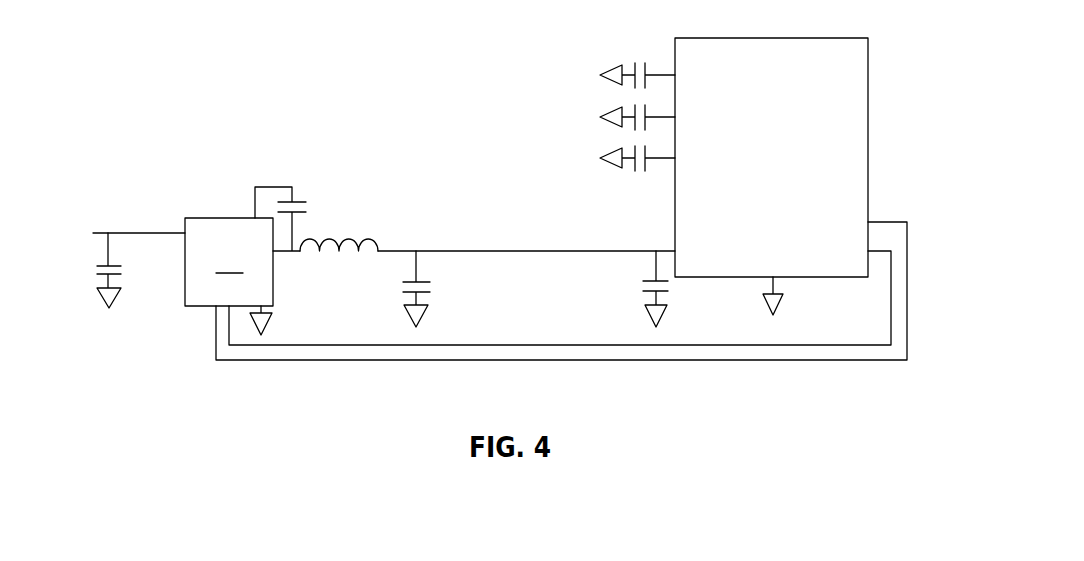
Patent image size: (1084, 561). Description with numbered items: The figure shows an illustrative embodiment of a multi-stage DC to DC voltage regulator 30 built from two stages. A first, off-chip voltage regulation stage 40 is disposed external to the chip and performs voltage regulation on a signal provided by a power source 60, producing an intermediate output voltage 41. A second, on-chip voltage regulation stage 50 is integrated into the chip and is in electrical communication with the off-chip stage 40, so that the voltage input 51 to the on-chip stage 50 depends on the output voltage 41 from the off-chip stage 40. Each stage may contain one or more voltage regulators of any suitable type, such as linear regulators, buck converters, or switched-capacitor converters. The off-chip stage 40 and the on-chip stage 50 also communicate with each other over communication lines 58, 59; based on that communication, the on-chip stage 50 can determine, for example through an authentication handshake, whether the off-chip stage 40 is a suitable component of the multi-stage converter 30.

The multi-stage DC to DC voltage regulator 30 is at (157, 74).
The first, off-chip voltage regulation stage 40 is at (245, 261).
The intermediate output voltage 41 is at (351, 239).
The second, on-chip voltage regulation stage 50 is at (868, 110).
The voltage input 51 is at (580, 250).
The communication line 58 is at (866, 345).
The communication line 59 is at (907, 320).
The power source 60 is at (108, 262).